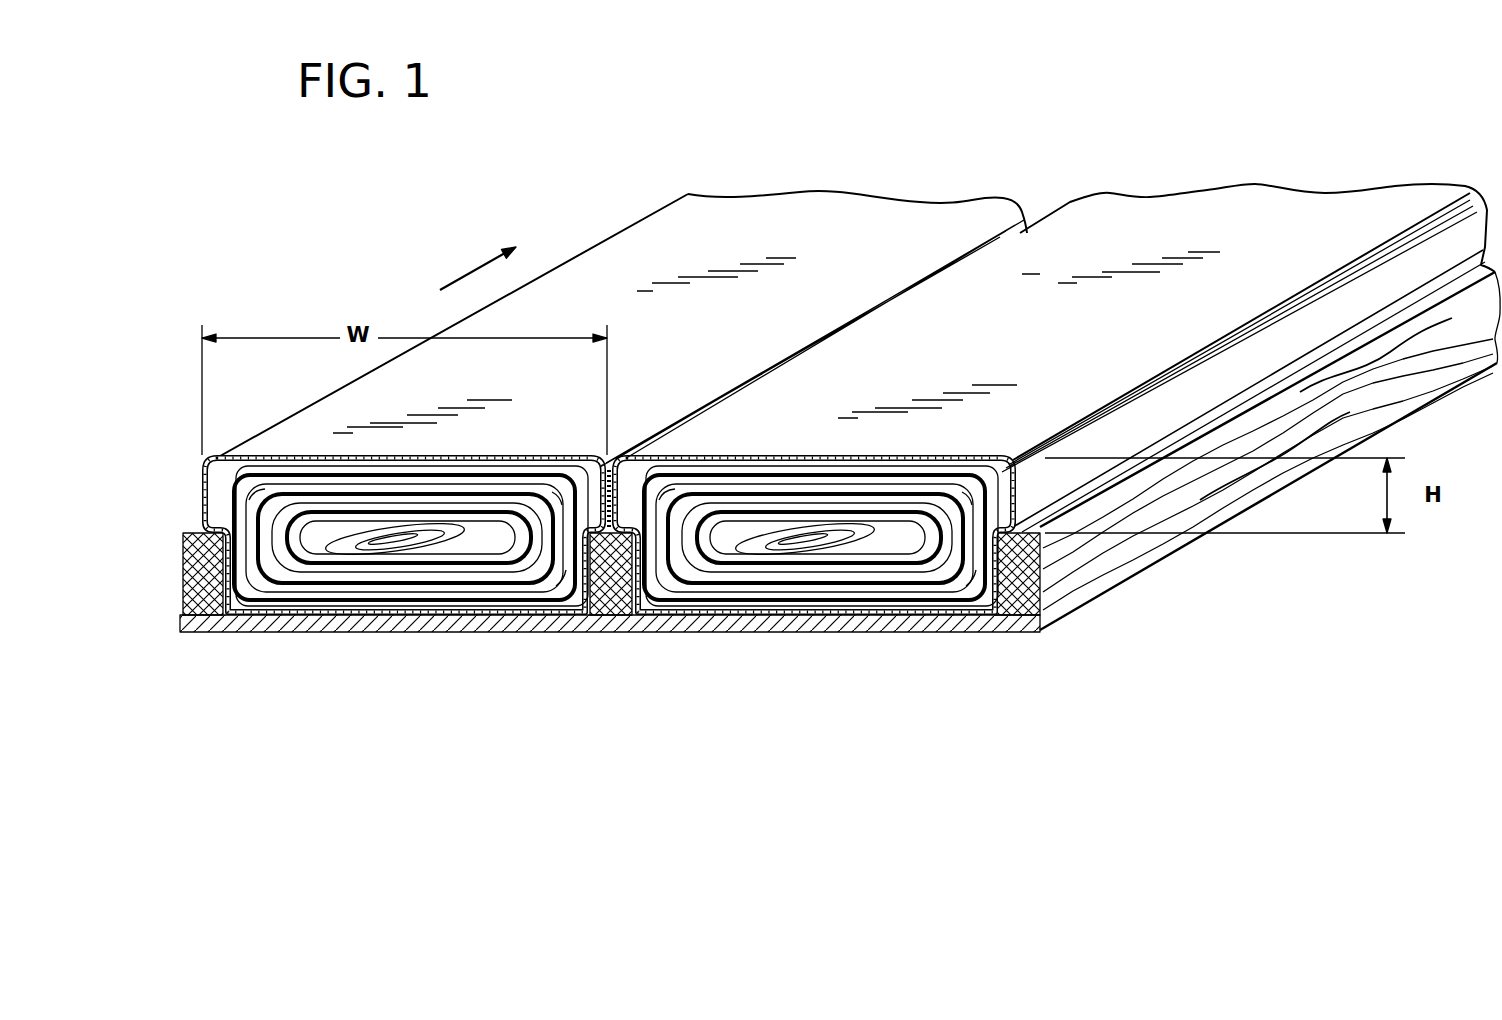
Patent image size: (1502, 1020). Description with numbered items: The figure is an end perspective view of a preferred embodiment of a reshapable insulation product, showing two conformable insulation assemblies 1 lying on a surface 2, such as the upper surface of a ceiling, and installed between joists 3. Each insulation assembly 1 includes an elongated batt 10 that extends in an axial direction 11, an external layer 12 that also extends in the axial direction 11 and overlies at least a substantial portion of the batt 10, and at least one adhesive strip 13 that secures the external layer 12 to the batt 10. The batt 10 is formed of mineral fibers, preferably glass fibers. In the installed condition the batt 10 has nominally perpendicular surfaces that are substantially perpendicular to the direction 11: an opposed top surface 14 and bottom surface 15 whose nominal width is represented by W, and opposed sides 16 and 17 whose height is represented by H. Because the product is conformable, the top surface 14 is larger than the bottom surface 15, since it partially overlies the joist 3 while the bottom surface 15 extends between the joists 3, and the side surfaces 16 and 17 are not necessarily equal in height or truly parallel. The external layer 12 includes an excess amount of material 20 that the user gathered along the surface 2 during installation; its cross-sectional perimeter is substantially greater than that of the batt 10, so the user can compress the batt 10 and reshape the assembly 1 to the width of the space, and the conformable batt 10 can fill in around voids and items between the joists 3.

The conformable insulation assembly 1 is at (841, 281).
The surface 2 is at (840, 481).
The joist 3 is at (188, 562).
The elongated batt 10 is at (609, 596).
The axial direction 11 is at (464, 245).
The external layer 12 is at (914, 275).
The adhesive strip 13 is at (617, 493).
The top surface 14 is at (609, 416).
The bottom surface 15 is at (611, 674).
The side surface 16 is at (1038, 364).
The side surface 17 is at (583, 450).
The excess amount of material 20 is at (649, 617).